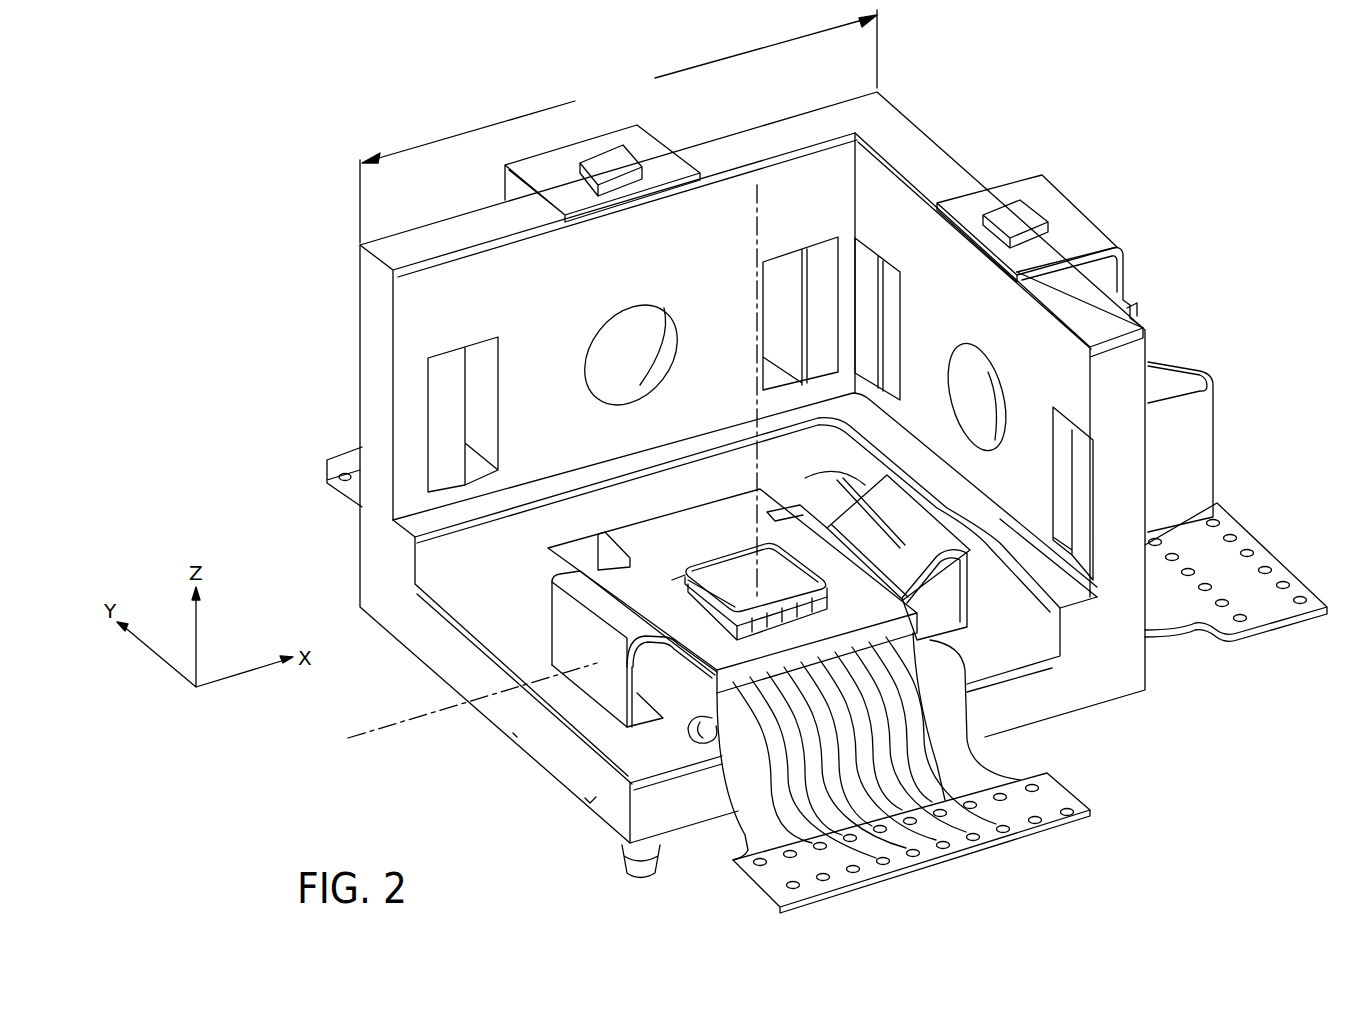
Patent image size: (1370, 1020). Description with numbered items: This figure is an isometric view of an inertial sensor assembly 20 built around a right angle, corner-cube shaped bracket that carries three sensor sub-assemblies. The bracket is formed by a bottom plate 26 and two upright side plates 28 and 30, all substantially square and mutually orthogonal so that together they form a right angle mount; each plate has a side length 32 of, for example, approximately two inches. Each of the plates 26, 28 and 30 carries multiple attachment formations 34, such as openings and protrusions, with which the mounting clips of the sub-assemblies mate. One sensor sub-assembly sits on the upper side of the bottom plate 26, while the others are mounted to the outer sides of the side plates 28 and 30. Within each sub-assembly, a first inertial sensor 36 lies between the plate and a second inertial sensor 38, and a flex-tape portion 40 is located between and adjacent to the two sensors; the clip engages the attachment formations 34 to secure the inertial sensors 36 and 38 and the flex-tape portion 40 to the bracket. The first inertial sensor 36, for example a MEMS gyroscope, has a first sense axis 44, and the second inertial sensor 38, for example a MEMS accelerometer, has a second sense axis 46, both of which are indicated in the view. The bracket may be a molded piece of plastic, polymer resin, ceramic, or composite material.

The inertial sensor assembly 20 is at (1138, 162).
The bottom plate 26 is at (486, 590).
The side plate 28 is at (367, 374).
The side plate 30 is at (1132, 353).
The side length 32 is at (618, 126).
The attachment formations 34 is at (493, 398).
The first inertial sensor 36 is at (692, 738).
The second inertial sensor 38 is at (718, 568).
The flex-tape portion 40 is at (1238, 575).
The first sense axis 44 is at (418, 718).
The second sense axis 46 is at (757, 250).